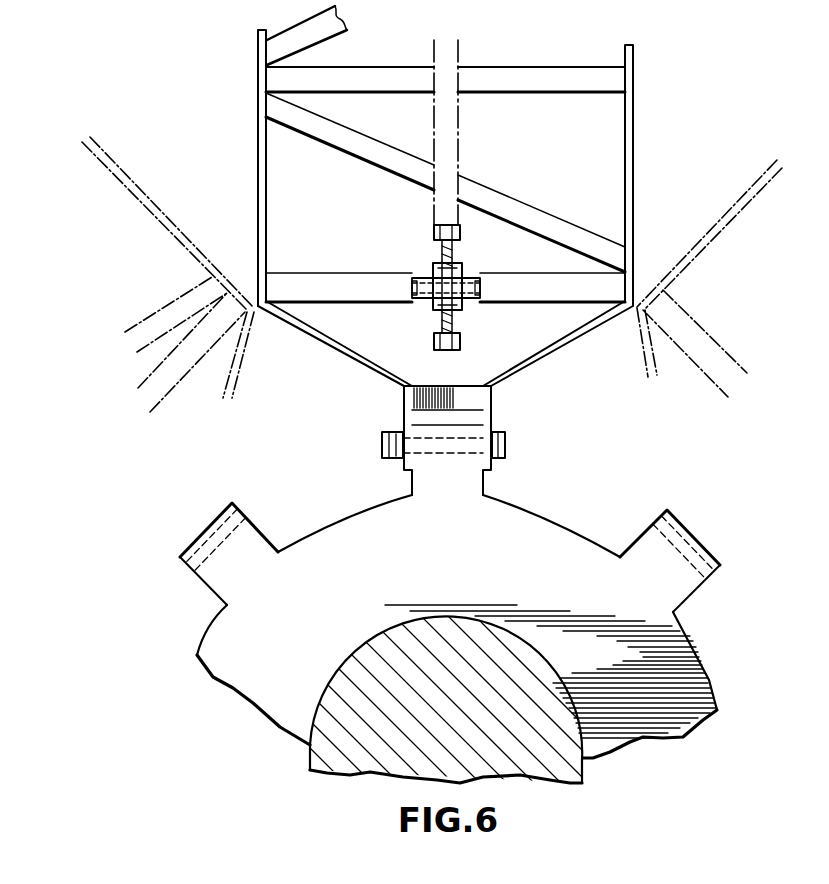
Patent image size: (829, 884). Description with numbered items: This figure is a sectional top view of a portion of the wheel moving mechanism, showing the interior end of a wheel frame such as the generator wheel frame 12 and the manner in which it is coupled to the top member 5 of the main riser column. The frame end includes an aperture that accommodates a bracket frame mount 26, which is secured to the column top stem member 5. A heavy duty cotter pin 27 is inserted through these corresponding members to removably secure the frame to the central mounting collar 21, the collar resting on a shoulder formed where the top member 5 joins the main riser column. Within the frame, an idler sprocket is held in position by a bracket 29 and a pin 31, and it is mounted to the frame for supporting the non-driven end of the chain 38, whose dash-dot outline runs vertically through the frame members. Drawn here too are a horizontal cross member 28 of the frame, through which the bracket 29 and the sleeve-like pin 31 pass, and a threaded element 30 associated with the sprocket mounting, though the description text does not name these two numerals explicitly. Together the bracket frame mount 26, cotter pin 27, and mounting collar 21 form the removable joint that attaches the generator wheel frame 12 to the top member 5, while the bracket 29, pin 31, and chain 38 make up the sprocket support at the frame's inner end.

The generator wheel frame 12 is at (637, 172).
The chain 38 is at (459, 143).
The cross beam 28 is at (322, 283).
The threaded rod 30 is at (441, 250).
The bracket 29 is at (472, 278).
The pin 31 is at (423, 294).
The heavy duty cotter pin 27 is at (503, 447).
The bracket frame mount 26 is at (418, 477).
The mounting collar 21 is at (455, 571).
The top member 5 is at (360, 672).